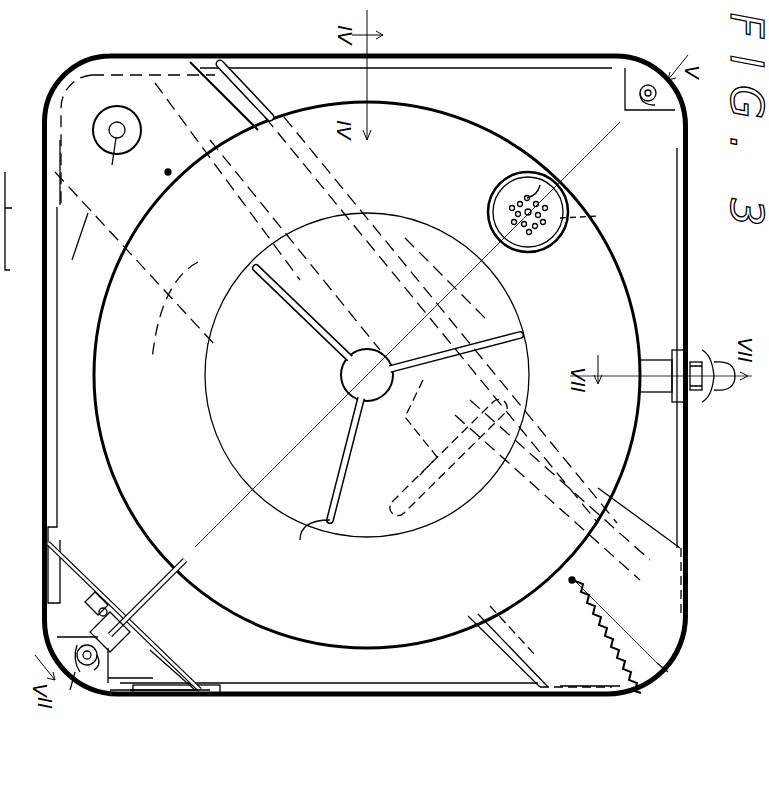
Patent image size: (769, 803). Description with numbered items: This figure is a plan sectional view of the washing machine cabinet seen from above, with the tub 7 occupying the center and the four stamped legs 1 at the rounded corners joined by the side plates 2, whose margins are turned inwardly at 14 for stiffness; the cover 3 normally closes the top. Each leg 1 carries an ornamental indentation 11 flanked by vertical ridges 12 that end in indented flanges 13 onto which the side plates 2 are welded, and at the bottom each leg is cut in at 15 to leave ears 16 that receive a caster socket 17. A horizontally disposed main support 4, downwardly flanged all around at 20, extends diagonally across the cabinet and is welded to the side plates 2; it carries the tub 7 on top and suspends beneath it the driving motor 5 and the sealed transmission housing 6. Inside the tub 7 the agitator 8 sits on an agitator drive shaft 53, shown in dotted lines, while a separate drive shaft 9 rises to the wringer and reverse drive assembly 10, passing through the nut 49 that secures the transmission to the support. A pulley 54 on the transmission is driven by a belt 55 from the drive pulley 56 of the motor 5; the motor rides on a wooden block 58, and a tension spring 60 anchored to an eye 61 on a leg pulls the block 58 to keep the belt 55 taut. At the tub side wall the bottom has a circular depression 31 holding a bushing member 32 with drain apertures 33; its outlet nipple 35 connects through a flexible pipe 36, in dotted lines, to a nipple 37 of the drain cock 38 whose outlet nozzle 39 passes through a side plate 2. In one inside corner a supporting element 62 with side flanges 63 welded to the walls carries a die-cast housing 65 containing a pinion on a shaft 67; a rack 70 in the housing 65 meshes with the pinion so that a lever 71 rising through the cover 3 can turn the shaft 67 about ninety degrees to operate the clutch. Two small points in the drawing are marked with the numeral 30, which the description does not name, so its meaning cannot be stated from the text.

The leg 1 is at (55, 98).
The side plate 2 is at (392, 56).
The cover 3 is at (118, 222).
The main support 4 is at (75, 243).
The driving motor 5 is at (430, 560).
The transmission housing 6 is at (168, 319).
The tub 7 is at (97, 435).
The agitator 8 is at (309, 540).
The drive shaft 9 is at (125, 130).
The wringer and reverse drive assembly 10 is at (104, 652).
The indentation 11 is at (86, 672).
The vertical ridge 12 is at (112, 695).
The flange 13 is at (130, 697).
The inturned marginal portion 14 is at (58, 398).
The cut-in 15 is at (697, 400).
The ear 16 is at (120, 668).
The caster socket 17 is at (86, 675).
The downward flange 20 is at (96, 278).
The pin 30 is at (170, 175).
The circular depression 31 is at (514, 225).
The bushing member 32 is at (525, 192).
The apertures 33 is at (514, 217).
The outlet nipple 35 is at (593, 214).
The flexible pipe 36 is at (580, 290).
The nipple 37 is at (635, 412).
The drain cock 38 is at (700, 405).
The outlet nozzle 39 is at (728, 392).
The nut 49 is at (658, 118).
The agitator drive shaft 53 is at (341, 370).
The pulley 54 is at (262, 100).
The belt 55 is at (395, 305).
The drive pulley 56 is at (632, 455).
The wooden block 58 is at (625, 552).
The tension spring 60 is at (618, 592).
The eye 61 is at (660, 655).
The supporting element 62 is at (182, 668).
The side flanges 63 is at (203, 686).
The die-cast housing 65 is at (130, 630).
The shaft 67 is at (150, 590).
The rack 70 is at (95, 592).
The lever 71 is at (105, 608).